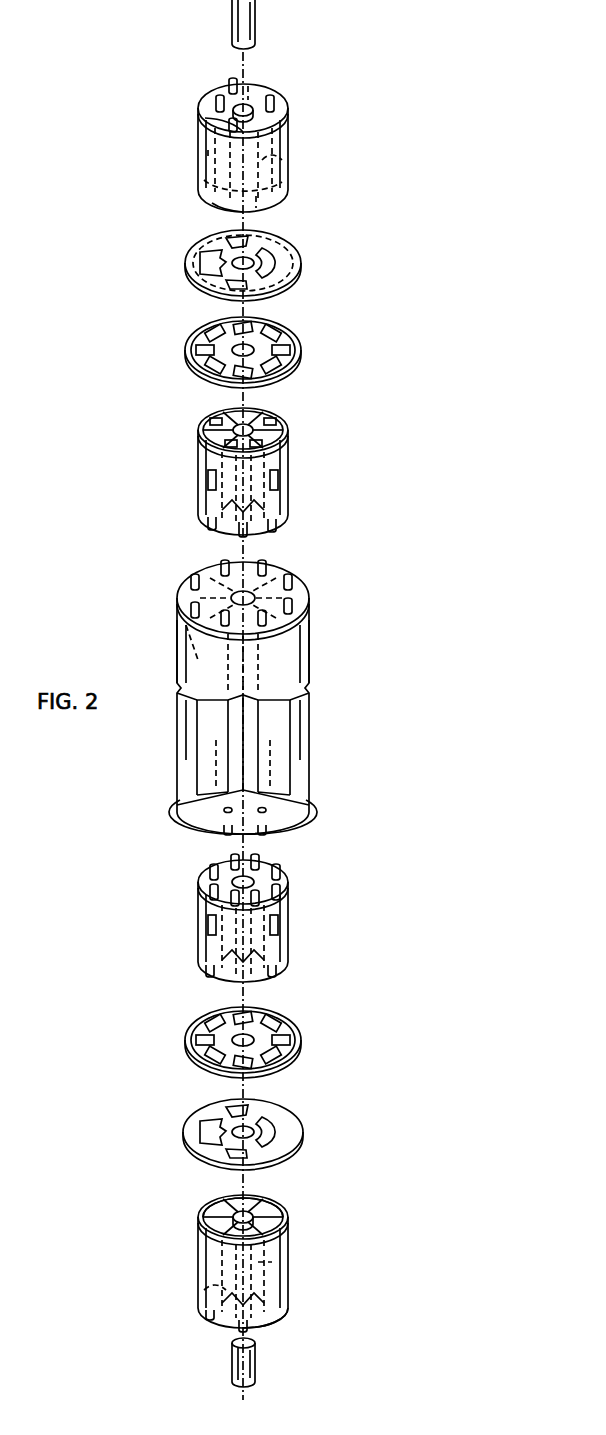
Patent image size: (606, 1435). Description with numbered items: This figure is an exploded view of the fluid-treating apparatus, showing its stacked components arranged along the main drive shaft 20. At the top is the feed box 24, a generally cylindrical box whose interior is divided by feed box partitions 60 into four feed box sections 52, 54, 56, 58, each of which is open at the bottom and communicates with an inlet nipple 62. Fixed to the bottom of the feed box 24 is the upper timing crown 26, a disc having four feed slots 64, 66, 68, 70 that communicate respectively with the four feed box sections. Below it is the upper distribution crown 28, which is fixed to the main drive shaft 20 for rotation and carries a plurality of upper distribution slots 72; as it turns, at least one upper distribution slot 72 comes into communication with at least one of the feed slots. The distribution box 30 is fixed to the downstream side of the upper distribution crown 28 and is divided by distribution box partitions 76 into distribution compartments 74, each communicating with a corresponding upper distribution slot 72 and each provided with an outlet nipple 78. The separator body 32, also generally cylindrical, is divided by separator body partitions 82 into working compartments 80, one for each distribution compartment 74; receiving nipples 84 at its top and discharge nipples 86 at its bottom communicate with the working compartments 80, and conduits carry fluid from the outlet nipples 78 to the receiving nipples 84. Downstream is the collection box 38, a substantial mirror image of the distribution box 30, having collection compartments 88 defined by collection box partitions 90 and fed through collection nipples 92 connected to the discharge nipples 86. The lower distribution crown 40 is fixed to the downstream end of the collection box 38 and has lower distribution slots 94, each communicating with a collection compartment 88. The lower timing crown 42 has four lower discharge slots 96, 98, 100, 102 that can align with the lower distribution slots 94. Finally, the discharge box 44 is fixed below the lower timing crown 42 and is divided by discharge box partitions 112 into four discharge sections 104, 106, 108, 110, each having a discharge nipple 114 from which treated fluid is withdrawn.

The main drive shaft 20 is at (266, 693).
The feed box 24 is at (267, 148).
The upper timing crown 26 is at (267, 265).
The upper distribution crown 28 is at (267, 352).
The distribution box 30 is at (265, 471).
The separator body 32 is at (263, 698).
The collection box 38 is at (264, 921).
The lower distribution crown 40 is at (267, 1042).
The lower timing crown 42 is at (265, 1134).
The discharge box 44 is at (265, 1261).
The feed box section 52 is at (295, 177).
The feed box section 54 is at (206, 209).
The feed box section 56 is at (197, 121).
The feed box section 58 is at (212, 74).
The feed box partitions 60 is at (230, 141).
The inlet nipple 62 is at (244, 102).
The feed slot 64 is at (295, 249).
The feed slot 66 is at (203, 294).
The feed slot 68 is at (183, 263).
The feed slot 70 is at (203, 233).
The upper distribution slots 72 is at (237, 344).
The distribution compartments 74 is at (236, 469).
The distribution box partitions 76 is at (244, 445).
The outlet nipple 78 is at (242, 531).
The working compartments 80 is at (244, 723).
The separator body partitions 82 is at (243, 691).
The receiving nipples 84 is at (241, 589).
The discharge nipples 86 is at (250, 834).
The collection compartments 88 is at (236, 980).
The collection box partitions 90 is at (241, 924).
The collection nipples 92 is at (242, 880).
The lower distribution slots 94 is at (239, 1041).
The lower discharge slot 96 is at (297, 1134).
The lower discharge slot 98 is at (259, 1170).
The lower discharge slot 100 is at (177, 1132).
The lower discharge slot 102 is at (199, 1098).
The discharge section 104 is at (270, 1202).
The discharge section 106 is at (282, 1315).
The discharge section 108 is at (182, 1298).
The discharge section 110 is at (200, 1206).
The discharge box partitions 112 is at (257, 1222).
The discharge nipple 114 is at (216, 1330).